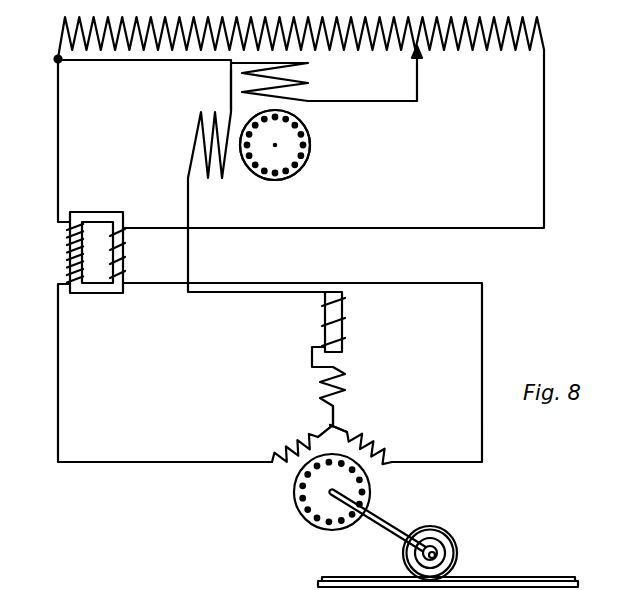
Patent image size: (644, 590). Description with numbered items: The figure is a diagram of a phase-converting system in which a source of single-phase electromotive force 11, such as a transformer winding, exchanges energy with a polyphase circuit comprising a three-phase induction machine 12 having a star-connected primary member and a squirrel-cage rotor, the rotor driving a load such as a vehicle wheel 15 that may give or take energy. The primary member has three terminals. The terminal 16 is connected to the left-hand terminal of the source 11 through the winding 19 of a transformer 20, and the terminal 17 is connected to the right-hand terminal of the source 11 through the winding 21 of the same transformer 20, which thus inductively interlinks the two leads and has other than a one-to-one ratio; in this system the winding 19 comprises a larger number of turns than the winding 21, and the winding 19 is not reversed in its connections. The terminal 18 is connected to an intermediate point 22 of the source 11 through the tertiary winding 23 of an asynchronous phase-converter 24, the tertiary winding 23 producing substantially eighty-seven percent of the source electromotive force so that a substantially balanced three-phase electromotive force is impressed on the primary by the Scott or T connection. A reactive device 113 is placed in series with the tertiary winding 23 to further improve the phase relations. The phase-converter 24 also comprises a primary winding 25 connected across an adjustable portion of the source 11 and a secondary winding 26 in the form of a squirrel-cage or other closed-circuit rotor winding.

The source of single-phase electromotive force 11 is at (545, 35).
The three-phase induction machine 12 is at (383, 413).
The vehicle wheel 15 is at (443, 540).
The terminal of the primary winding 16 is at (273, 458).
The terminal of the primary winding 17 is at (392, 458).
The terminal of the primary winding 18 is at (334, 367).
The low-voltage winding 19 is at (66, 256).
The transformer 20 is at (105, 268).
The high-voltage winding 21 is at (133, 251).
The intermediate point 22 is at (231, 87).
The tertiary winding 23 is at (193, 145).
The asynchronous phase-converter 24 is at (352, 169).
The primary winding 25 is at (309, 83).
The secondary winding 26 is at (305, 140).
The reactive device 113 is at (351, 315).